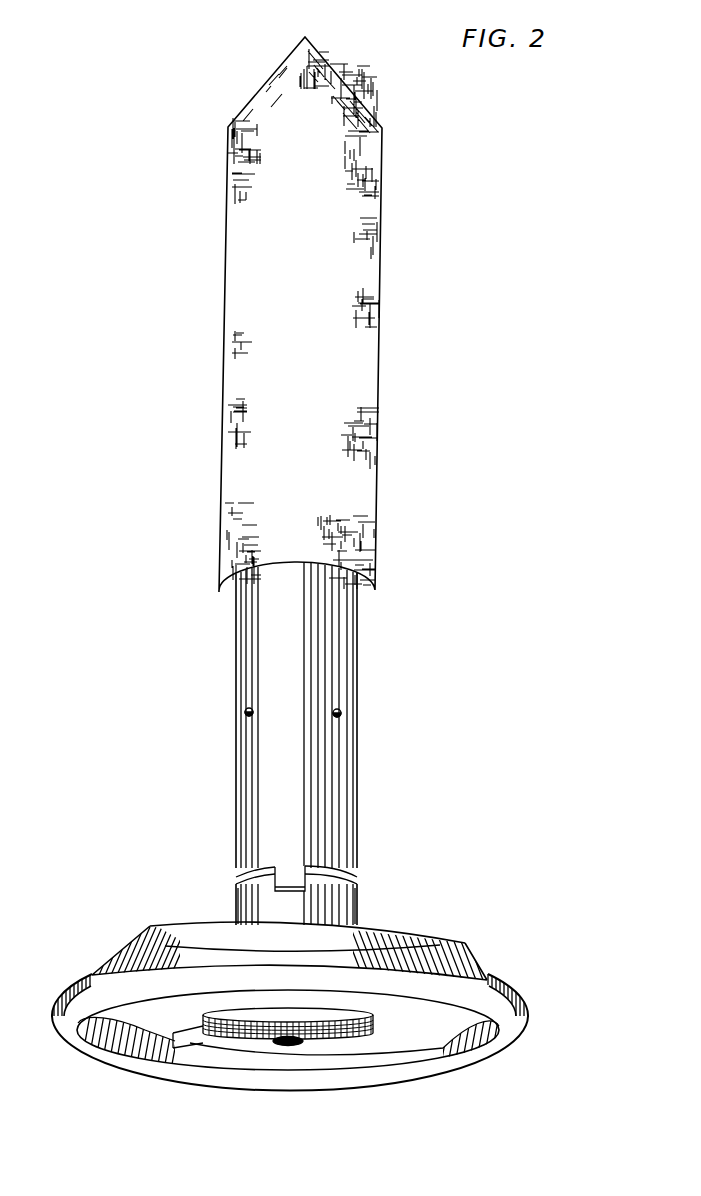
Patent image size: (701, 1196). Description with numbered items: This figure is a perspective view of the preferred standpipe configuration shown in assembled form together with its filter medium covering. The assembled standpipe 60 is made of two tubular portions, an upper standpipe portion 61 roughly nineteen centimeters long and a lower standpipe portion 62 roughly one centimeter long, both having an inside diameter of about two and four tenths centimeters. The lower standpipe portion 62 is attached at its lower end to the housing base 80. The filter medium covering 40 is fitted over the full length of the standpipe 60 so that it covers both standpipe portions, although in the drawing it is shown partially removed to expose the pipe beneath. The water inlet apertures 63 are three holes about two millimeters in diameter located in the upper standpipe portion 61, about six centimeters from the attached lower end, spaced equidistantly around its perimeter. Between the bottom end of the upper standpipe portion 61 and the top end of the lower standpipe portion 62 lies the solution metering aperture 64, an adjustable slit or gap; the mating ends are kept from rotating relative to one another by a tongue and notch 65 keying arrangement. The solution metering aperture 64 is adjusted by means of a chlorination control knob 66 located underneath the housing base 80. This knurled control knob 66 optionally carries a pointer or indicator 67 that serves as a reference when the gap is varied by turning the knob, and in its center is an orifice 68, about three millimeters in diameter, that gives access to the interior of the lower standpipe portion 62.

The filter medium covering 40 is at (247, 350).
The standpipe 60 is at (280, 815).
The upper standpipe portion 61 is at (250, 635).
The lower standpipe portion 62 is at (243, 912).
The water inlet apertures 63 is at (337, 713).
The solution metering aperture 64 is at (234, 875).
The tongue and notch 65 is at (288, 875).
The chlorination control knob 66 is at (365, 1035).
The pointer or indicator 67 is at (193, 1050).
The orifice 68 is at (284, 1047).
The housing base 80 is at (150, 925).